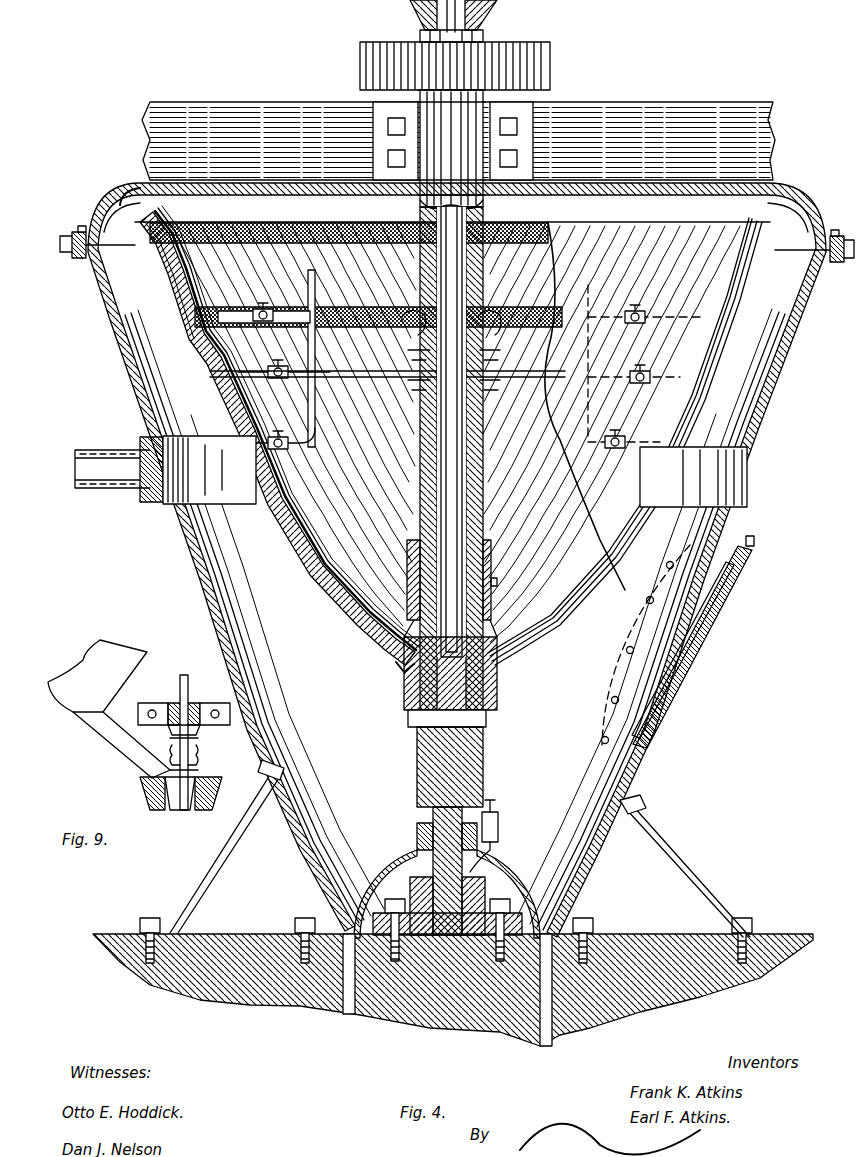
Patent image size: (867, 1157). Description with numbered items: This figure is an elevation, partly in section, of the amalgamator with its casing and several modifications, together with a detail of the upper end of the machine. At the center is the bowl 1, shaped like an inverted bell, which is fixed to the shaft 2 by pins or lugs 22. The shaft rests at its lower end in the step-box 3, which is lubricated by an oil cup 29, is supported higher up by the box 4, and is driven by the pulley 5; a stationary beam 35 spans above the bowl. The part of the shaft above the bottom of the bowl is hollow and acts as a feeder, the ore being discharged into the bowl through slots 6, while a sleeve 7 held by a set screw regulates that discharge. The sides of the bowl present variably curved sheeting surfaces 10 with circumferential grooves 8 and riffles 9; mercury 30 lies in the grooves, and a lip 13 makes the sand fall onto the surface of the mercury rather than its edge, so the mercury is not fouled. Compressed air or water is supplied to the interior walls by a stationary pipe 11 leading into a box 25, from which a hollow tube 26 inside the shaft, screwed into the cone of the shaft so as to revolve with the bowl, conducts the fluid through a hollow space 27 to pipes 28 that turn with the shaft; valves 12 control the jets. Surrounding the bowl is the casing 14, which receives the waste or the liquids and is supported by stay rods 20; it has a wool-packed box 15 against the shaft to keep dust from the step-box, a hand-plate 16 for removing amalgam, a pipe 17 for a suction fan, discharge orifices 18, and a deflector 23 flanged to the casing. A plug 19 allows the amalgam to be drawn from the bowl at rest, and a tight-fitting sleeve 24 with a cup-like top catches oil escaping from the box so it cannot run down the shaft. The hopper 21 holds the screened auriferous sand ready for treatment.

In FIG. 4, the bowl 1 is at (300, 548).
In FIG. 4, the shaft 2 is at (416, 511).
In FIG. 4, the step-box 3 is at (406, 896).
In FIG. 4, the box 4 is at (522, 102).
In FIG. 4, the pulley 5 is at (556, 60).
In FIG. 4, the slots 6 is at (410, 623).
In FIG. 4, the sleeve 7 is at (402, 581).
In FIG. 4, the grooves 8 is at (155, 233).
In FIG. 4, the riffles 9 is at (145, 222).
In FIG. 4, the variably curved sheeting surfaces 10 is at (282, 515).
In FIG. 9, the stationary pipe 11 is at (188, 700).
In FIG. 4, the valves 12 is at (268, 305).
In FIG. 4, the lip 13 is at (172, 270).
In FIG. 4, the casing 14 is at (132, 348).
In FIG. 4, the box 15 is at (416, 836).
In FIG. 4, the hand-plate 16 is at (700, 640).
In FIG. 4, the pipe 17 is at (120, 487).
In FIG. 4, the discharge orifices 18 is at (345, 1014).
In FIG. 4, the plug 19 is at (394, 666).
In FIG. 4, the stay rods 20 is at (235, 845).
In FIG. 9, the hopper 21 is at (95, 668).
In FIG. 4, the pins 22 is at (494, 721).
In FIG. 4, the deflector 23 is at (110, 200).
In FIG. 9, the sleeve 24 is at (200, 752).
In FIG. 9, the box 25 is at (172, 702).
In FIG. 4, the hollow tube 26 is at (462, 470).
In FIG. 9, the hollow tube 26 is at (200, 780).
In FIG. 4, the hollow space 27 is at (468, 480).
In FIG. 4, the pipes 28 is at (352, 372).
In FIG. 4, the oil cup 29 is at (500, 826).
In FIG. 4, the mercury 30 is at (160, 250).
In FIG. 4, the stationary beam 35 is at (605, 100).